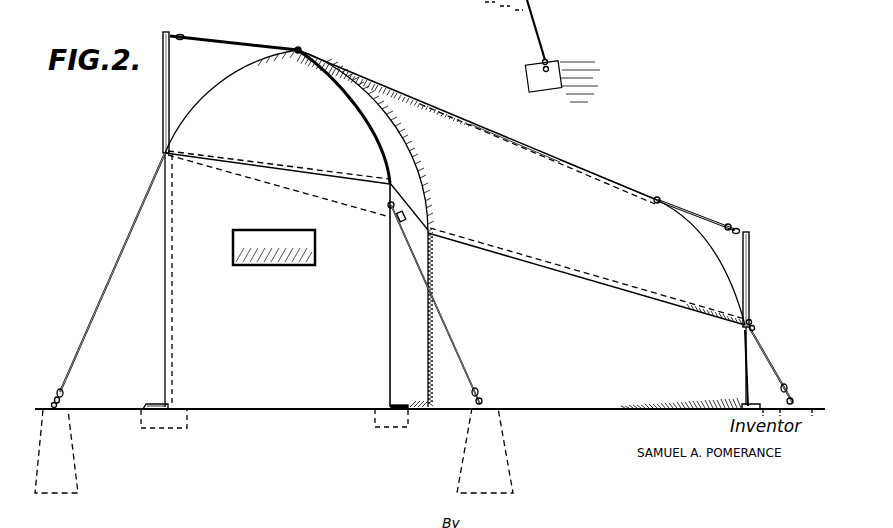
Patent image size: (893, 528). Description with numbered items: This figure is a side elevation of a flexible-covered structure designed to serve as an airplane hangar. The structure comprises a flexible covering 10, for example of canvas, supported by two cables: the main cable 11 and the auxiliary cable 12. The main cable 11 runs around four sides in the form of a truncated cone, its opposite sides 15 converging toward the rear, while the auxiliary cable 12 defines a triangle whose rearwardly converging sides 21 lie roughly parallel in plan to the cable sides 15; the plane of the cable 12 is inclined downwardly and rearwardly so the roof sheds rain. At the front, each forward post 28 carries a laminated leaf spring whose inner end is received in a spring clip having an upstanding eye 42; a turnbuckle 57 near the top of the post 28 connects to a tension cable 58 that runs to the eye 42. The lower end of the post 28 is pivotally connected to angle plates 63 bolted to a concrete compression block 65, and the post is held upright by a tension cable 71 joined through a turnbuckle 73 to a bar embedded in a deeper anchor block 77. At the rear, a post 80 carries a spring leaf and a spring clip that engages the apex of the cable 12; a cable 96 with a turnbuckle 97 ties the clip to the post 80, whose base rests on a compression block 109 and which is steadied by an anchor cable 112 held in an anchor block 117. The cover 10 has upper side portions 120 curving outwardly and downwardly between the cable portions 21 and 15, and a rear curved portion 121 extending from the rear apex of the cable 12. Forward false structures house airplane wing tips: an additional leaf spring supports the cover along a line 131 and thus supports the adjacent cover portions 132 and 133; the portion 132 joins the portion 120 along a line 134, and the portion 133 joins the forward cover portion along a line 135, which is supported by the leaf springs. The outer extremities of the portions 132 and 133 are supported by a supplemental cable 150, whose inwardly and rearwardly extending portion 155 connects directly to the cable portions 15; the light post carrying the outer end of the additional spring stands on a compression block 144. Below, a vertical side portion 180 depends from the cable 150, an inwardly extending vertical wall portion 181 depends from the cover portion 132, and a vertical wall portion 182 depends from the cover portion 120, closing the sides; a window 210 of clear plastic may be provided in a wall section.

The flexible covering 10 is at (540, 178).
The main cable 11 is at (319, 202).
The auxiliary cable 12 is at (462, 127).
The cable side 15 is at (358, 222).
The cable side 21 is at (516, 150).
The forward post 28 is at (163, 117).
The upstanding eye 42 is at (300, 48).
The turnbuckle 57 is at (181, 36).
The tension cable 58 is at (235, 42).
The angle plate 63 is at (158, 403).
The compression block 65 is at (188, 430).
The tension cable 71 is at (111, 260).
The turnbuckle 73 is at (58, 392).
The anchor block 77 is at (75, 440).
The rear post 80 is at (750, 278).
The cable 96 is at (692, 213).
The turnbuckle 97 is at (736, 227).
The compression block 109 is at (722, 408).
The anchor cable 112 is at (776, 358).
The anchor block 117 is at (803, 400).
The upper side portion 120 is at (604, 182).
The curved cover portion 121 is at (718, 245).
The support line 131 is at (362, 125).
The cover portion 132 is at (397, 152).
The cover portion 133 is at (364, 89).
The juncture line 134 is at (412, 170).
The juncture line 135 is at (218, 85).
The compression block 144 is at (386, 428).
The supplemental cable 150 is at (247, 156).
The cable portion 155 is at (406, 212).
The vertical side portion 180 is at (281, 303).
The vertical wall portion 181 is at (411, 296).
The vertical wall portion 182 is at (547, 324).
The window 210 is at (251, 267).